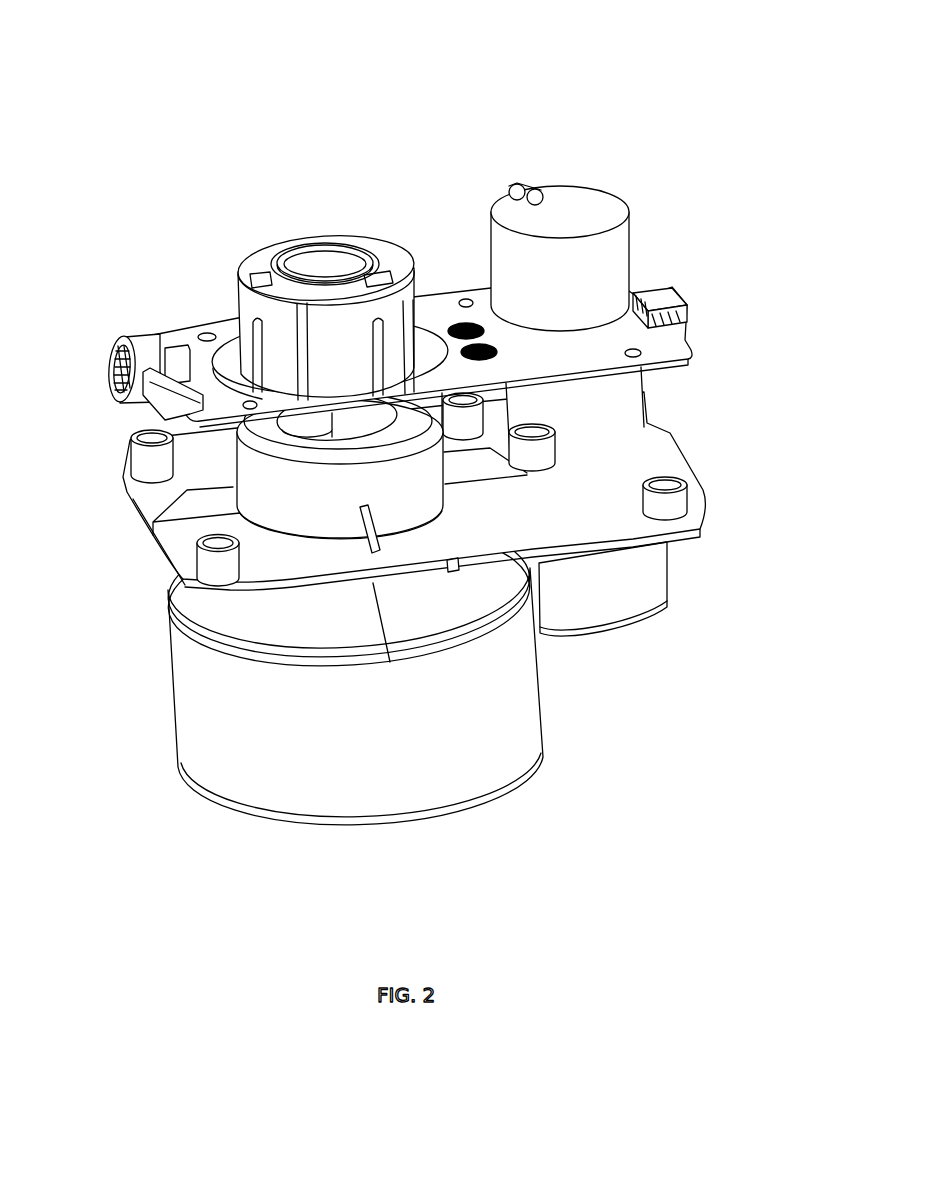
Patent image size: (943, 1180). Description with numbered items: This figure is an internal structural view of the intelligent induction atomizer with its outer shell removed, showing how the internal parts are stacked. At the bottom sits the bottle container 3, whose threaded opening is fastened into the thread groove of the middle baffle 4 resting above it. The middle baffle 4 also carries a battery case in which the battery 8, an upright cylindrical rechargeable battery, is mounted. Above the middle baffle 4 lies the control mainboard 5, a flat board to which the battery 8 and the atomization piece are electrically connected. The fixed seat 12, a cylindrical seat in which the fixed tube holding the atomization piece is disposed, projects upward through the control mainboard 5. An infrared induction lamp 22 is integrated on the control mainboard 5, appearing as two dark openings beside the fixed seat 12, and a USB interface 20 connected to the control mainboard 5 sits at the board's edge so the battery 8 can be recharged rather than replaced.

The bottle container 3 is at (490, 800).
The middle baffle 4 is at (707, 519).
The control mainboard 5 is at (170, 322).
The battery 8 is at (592, 186).
The fixed seat 12 is at (406, 256).
The USB interface 20 is at (673, 297).
The infrared induction lamp 22 is at (482, 329).